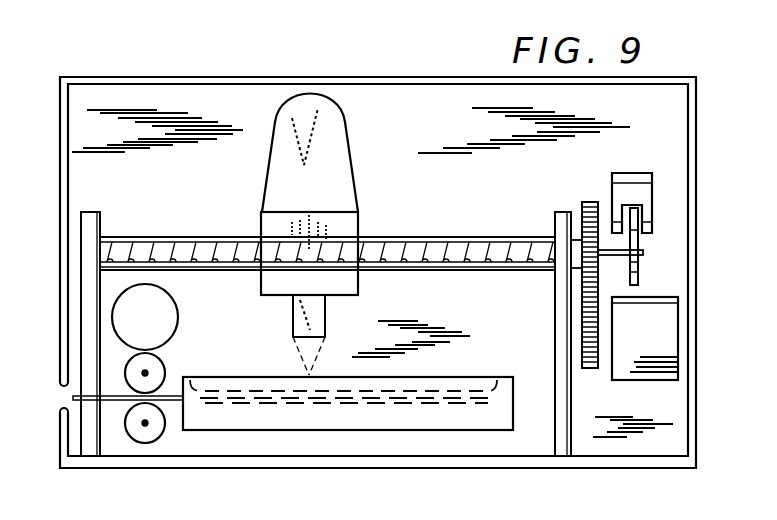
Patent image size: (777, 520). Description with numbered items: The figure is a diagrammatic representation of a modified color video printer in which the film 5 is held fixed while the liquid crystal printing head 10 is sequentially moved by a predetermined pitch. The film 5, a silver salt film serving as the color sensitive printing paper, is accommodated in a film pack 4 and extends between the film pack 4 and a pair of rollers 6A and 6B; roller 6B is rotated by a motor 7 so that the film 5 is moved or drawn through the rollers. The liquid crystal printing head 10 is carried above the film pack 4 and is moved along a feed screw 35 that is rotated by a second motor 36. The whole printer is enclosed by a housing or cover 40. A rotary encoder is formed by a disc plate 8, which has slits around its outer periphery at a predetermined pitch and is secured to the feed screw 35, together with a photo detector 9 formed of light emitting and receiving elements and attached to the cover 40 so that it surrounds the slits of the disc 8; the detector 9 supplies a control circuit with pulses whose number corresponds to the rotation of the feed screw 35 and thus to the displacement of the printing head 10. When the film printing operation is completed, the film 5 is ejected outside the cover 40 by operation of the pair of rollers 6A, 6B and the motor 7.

The film pack 4 is at (492, 377).
The film 5 is at (133, 373).
The roller 6A is at (130, 364).
The roller 6B is at (126, 423).
The motor 7 is at (112, 313).
The disc 8 is at (640, 276).
The photo detector 9 is at (643, 198).
The liquid crystal printing head 10 is at (343, 148).
The feed screw 35 is at (470, 237).
The motor 36 is at (672, 325).
The housing or cover 40 is at (705, 394).